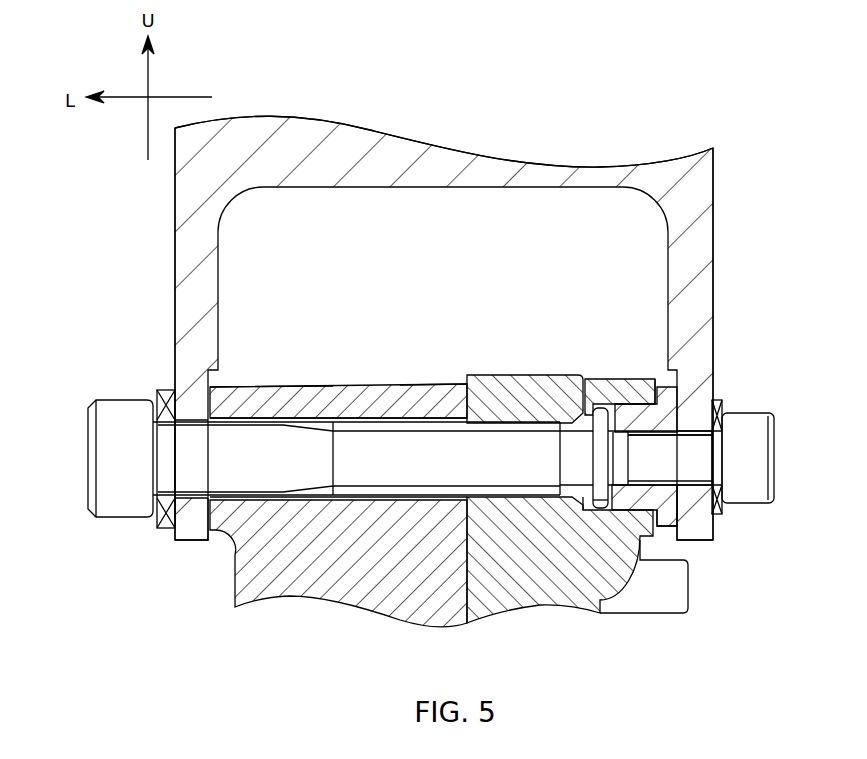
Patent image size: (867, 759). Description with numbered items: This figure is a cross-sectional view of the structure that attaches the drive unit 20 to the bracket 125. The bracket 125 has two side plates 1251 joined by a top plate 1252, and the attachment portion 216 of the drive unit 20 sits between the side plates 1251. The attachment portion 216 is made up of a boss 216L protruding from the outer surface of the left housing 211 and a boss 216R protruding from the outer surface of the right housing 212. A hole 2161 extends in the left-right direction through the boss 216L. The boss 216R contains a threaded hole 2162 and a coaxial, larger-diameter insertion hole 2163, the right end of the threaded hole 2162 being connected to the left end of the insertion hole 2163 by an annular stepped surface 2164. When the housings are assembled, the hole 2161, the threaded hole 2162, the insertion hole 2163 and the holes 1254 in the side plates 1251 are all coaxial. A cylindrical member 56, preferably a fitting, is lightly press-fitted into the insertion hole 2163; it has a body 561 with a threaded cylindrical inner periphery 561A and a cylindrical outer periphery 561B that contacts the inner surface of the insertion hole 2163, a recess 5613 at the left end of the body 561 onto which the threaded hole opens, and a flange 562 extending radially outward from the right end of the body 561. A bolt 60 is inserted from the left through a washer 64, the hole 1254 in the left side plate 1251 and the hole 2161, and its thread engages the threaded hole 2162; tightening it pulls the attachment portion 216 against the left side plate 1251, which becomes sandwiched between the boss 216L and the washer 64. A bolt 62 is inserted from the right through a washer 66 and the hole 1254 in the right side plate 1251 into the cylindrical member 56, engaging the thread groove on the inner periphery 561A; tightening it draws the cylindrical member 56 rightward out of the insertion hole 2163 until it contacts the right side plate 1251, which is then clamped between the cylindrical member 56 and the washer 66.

The bracket 125 is at (716, 173).
The side plate 1251 is at (178, 283).
The top plate 1252 is at (447, 150).
The hole 1254 is at (182, 490).
The bolt 60 is at (113, 400).
The drive unit 20 is at (390, 386).
The washer 64 is at (158, 522).
The attachment portion 216 is at (270, 386).
The boss 216L is at (333, 390).
The boss 216R is at (518, 386).
The hole 2161 is at (425, 416).
The threaded hole 2162 is at (502, 427).
The insertion hole 2163 is at (608, 392).
The stepped surface 2164 is at (563, 380).
The left housing 211 is at (235, 596).
The right housing 212 is at (689, 592).
The cylindrical member 56 is at (712, 372).
The body 561 is at (620, 500).
The inner periphery 561A is at (693, 455).
The outer periphery 561B is at (630, 517).
The recess 5613 is at (583, 500).
The flange 562 is at (672, 521).
The washer 66 is at (717, 400).
The bolt 62 is at (756, 416).